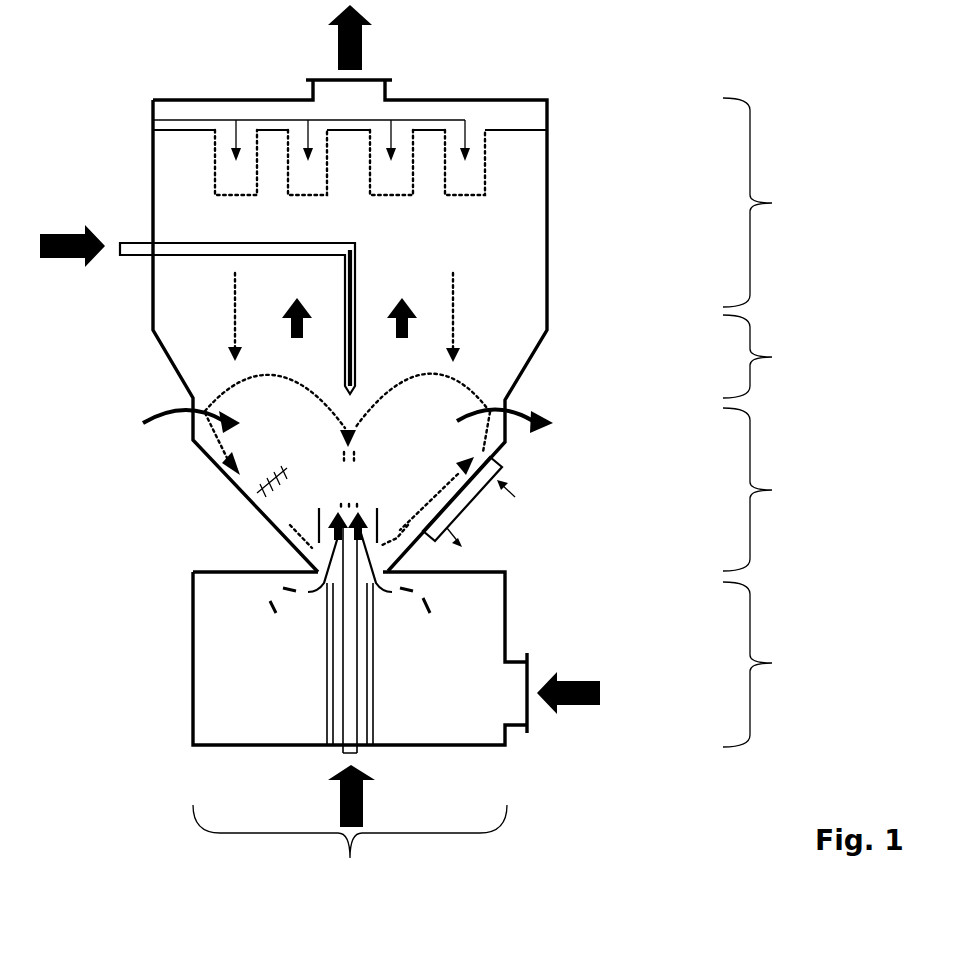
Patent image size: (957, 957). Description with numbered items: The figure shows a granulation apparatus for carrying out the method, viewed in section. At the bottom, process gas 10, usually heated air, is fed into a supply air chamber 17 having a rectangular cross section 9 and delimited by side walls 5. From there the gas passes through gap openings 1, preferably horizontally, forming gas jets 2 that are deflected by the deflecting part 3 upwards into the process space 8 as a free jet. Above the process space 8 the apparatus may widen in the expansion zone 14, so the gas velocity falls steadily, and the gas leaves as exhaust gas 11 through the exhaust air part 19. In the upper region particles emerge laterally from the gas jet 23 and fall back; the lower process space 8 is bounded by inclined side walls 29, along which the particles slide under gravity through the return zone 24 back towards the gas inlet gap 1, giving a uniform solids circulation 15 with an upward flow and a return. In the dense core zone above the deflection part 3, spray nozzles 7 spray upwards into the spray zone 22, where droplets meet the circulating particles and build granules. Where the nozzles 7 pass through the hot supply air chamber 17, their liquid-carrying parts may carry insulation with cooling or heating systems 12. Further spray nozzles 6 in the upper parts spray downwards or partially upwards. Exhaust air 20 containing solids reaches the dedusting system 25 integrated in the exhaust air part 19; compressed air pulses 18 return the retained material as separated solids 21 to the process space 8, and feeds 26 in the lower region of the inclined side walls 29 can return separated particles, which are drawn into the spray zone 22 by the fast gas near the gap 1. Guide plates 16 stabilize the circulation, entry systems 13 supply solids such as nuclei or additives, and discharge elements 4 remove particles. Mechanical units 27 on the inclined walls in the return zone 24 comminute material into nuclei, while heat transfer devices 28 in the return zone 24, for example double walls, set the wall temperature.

The gap opening 1 is at (257, 601).
The gas jet 2 is at (276, 600).
The deflecting part 3 is at (294, 696).
The discharge element 4 is at (523, 395).
The side wall 5 is at (479, 709).
The spray nozzle 6 is at (197, 309).
The spray nozzle 7 is at (376, 667).
The process space 8 is at (770, 489).
The cross section 9 is at (350, 832).
The process gas 10 is at (594, 693).
The exhaust gas 11 is at (375, 37).
The insulation with cooling or heating system 12 is at (247, 664).
The entry system 13 is at (180, 395).
The expansion zone 14 is at (770, 356).
The solids circulation 15 is at (422, 410).
The guide plate 16 is at (250, 539).
The supply air chamber 17 is at (505, 659).
The compressed air pulses 18 is at (270, 131).
The exhaust air part 19 is at (485, 326).
The exhaust air containing solids 20 is at (285, 315).
The separated solids 21 is at (446, 317).
The spray zone 22 is at (347, 485).
The gas jet 23 is at (275, 401).
The return zone 24 is at (441, 479).
The integrated dedusting system 25 is at (308, 167).
The feed 26 is at (481, 555).
The mechanical unit 27 is at (248, 504).
The heat transfer device 28 is at (492, 508).
The inclined side wall 29 is at (217, 480).